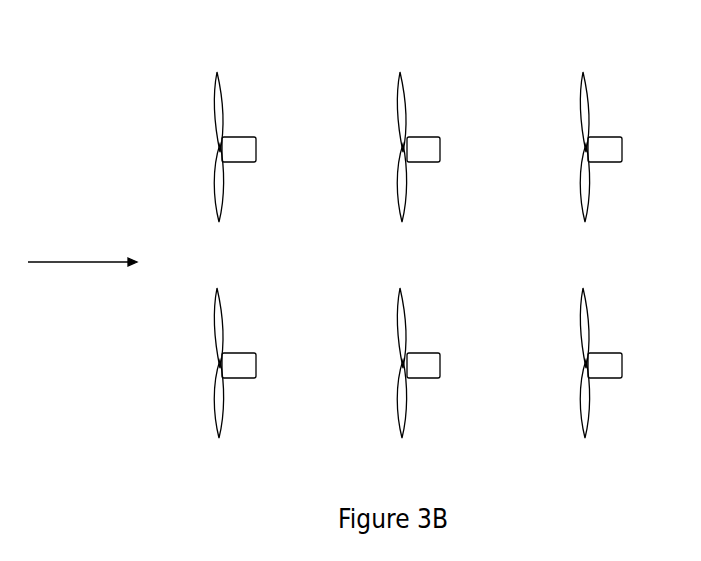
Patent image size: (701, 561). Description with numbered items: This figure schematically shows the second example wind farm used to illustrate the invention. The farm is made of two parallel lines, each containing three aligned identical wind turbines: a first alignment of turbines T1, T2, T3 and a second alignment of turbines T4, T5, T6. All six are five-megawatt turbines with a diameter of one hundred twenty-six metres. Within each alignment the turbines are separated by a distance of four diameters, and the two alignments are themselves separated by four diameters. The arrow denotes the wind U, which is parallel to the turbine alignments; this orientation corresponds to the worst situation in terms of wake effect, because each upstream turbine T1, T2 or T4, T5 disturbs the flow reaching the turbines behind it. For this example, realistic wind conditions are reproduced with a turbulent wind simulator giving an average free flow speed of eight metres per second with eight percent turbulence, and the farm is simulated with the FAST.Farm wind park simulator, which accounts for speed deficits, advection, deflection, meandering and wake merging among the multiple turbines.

The wind turbine T1 is at (245, 137).
The wind turbine T2 is at (430, 137).
The wind turbine T3 is at (610, 137).
The wind turbine T4 is at (235, 353).
The wind turbine T5 is at (425, 353).
The wind turbine T6 is at (610, 353).
The wind U is at (82, 247).